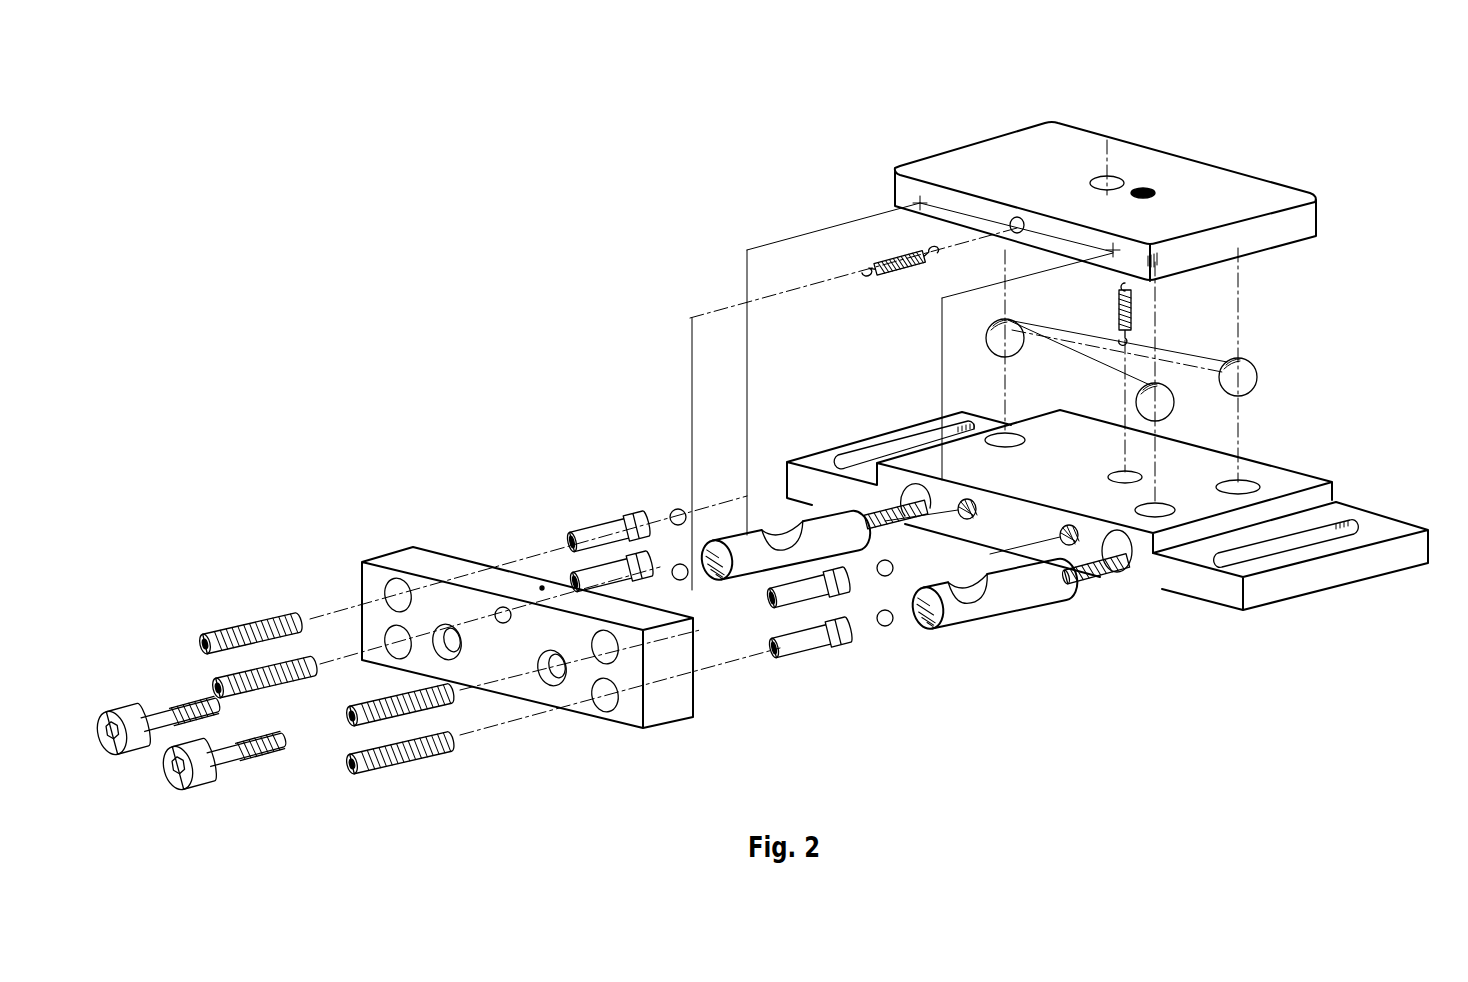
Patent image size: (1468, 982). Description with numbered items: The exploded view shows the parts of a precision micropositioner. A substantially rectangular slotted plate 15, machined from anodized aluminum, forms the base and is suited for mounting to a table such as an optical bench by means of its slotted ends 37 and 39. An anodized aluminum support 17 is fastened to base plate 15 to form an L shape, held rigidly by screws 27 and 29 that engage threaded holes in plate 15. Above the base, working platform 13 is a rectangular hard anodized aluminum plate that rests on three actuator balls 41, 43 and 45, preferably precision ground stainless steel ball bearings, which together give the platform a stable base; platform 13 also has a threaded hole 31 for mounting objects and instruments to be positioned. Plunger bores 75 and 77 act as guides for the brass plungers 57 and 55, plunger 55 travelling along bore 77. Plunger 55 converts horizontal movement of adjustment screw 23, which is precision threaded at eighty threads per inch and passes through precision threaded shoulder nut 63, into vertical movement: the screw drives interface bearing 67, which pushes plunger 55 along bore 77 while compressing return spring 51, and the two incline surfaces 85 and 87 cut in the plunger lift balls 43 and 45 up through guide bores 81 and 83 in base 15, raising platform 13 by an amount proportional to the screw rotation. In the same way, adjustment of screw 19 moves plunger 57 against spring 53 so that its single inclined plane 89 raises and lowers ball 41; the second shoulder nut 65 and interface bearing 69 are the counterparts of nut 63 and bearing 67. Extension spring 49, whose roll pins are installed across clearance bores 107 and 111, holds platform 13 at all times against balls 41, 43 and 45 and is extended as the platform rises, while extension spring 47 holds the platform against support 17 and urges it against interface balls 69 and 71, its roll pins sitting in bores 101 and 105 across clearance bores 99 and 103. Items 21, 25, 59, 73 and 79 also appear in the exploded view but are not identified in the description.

The platform 13 is at (1318, 224).
The slotted plate 15 is at (1370, 525).
The support 17 is at (665, 730).
The adjustment screw 19 is at (208, 683).
The set screw 21 is at (220, 628).
The adjustment screw 23 is at (450, 768).
The set screw 25 is at (358, 708).
The screw 27 is at (148, 708).
The screw 29 is at (217, 763).
The threaded hole 31 is at (1144, 186).
The slotted end 37 is at (1348, 515).
The slotted end 39 is at (907, 445).
The actuator ball 41 is at (987, 332).
The actuator ball 43 is at (1175, 403).
The actuator ball 45 is at (1240, 360).
The extension spring 47 is at (893, 252).
The extension spring 49 is at (1120, 293).
The return spring 51 is at (1107, 572).
The spring 53 is at (772, 535).
The plunger 55 is at (963, 627).
The plunger 57 is at (700, 520).
The pin 59 is at (588, 520).
The precision threaded shoulder nut 63 is at (778, 656).
The precision threaded shoulder nut 65 is at (775, 598).
The interface bearing 67 is at (885, 627).
The interface bearing 69 is at (888, 560).
The interface ball 71 is at (674, 510).
The ball 73 is at (688, 580).
The plunger bore 75 is at (930, 495).
The plunger bore 77 is at (1140, 570).
The hole 79 is at (1013, 432).
The guide bore 81 is at (1160, 503).
The guide bore 83 is at (1250, 480).
The incline surface 85 is at (945, 590).
The incline surface 87 is at (1042, 575).
The incline surface 89 is at (748, 530).
The clearance bore 99 is at (507, 623).
The bore 101 is at (542, 582).
The clearance bore 103 is at (1007, 232).
The bore 105 is at (1027, 205).
The clearance bore 107 is at (1100, 180).
The clearance bore 111 is at (1118, 473).